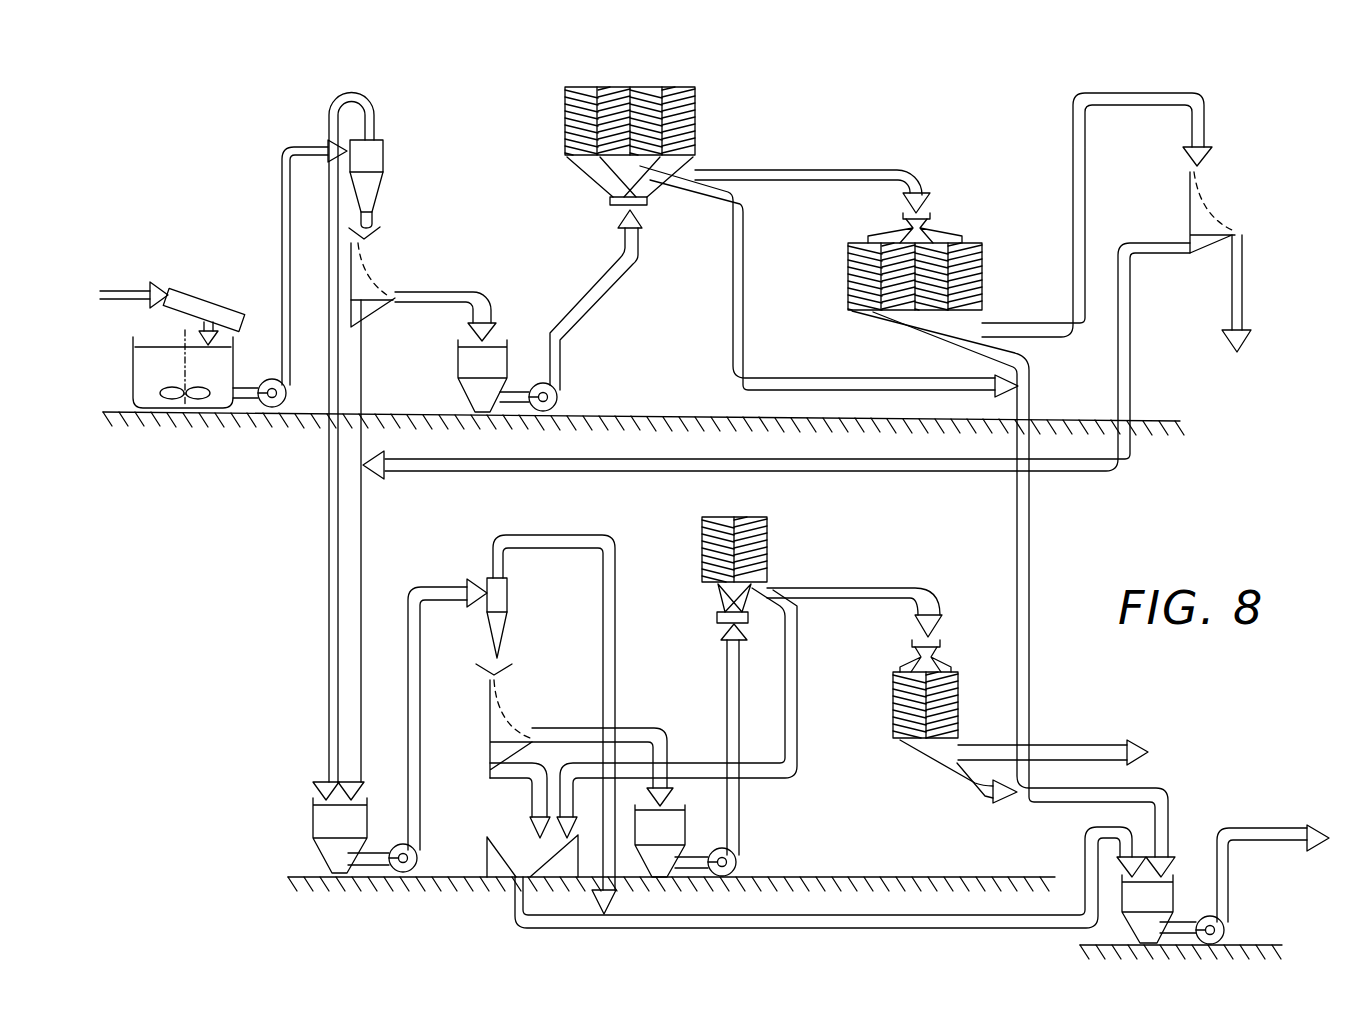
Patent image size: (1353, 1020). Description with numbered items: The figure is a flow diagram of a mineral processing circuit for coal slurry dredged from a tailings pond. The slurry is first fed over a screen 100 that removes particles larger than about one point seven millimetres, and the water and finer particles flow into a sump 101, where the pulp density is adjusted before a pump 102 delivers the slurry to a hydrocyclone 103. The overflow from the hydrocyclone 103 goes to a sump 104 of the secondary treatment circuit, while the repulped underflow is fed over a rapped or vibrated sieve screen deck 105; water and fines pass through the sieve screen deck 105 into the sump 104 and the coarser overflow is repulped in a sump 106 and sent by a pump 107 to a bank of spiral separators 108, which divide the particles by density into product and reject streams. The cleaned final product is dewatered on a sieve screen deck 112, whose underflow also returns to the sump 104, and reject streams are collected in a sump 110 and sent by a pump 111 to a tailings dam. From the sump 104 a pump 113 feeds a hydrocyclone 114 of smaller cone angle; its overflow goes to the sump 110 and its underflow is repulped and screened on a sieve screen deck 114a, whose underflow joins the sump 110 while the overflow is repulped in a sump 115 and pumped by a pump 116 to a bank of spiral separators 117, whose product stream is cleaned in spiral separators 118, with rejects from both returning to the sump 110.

The screen 100 is at (192, 302).
The sump 101 is at (186, 412).
The pump 102 is at (290, 412).
The hydrocyclone 103 is at (373, 160).
The sump 104 is at (325, 825).
The sieve screen deck 105 is at (363, 281).
The sump 106 is at (478, 362).
The pump 107 is at (556, 397).
The bank of spiral separators 108 is at (697, 122).
The sump 110 is at (1173, 892).
The pump 111 is at (1224, 931).
The sieve screen deck 112 is at (1203, 206).
The pump 113 is at (413, 853).
The hydrocyclone 114 is at (500, 598).
The sieve screen deck 114a is at (505, 712).
The sump 115 is at (672, 827).
The pump 116 is at (738, 860).
The bank of spiral separators 117 is at (767, 530).
The cleaning spiral separators 118 is at (907, 723).